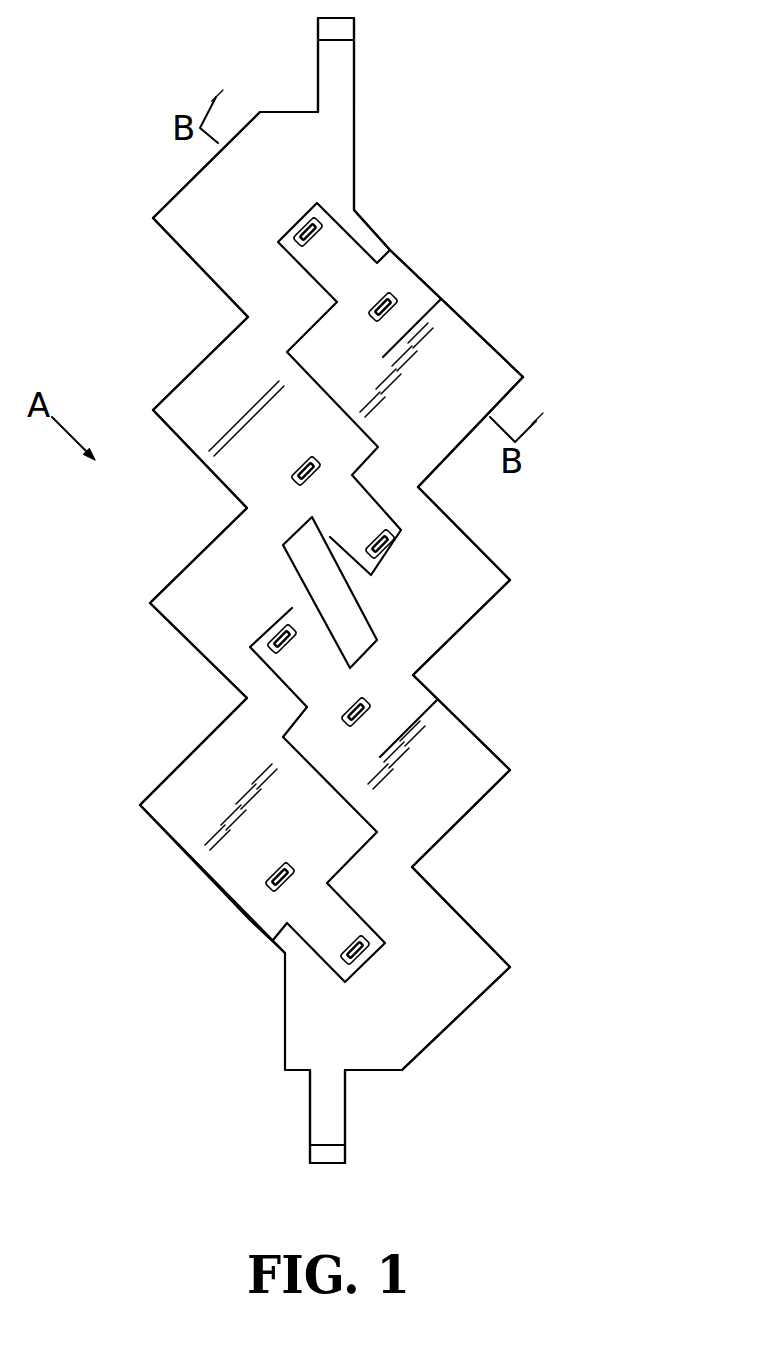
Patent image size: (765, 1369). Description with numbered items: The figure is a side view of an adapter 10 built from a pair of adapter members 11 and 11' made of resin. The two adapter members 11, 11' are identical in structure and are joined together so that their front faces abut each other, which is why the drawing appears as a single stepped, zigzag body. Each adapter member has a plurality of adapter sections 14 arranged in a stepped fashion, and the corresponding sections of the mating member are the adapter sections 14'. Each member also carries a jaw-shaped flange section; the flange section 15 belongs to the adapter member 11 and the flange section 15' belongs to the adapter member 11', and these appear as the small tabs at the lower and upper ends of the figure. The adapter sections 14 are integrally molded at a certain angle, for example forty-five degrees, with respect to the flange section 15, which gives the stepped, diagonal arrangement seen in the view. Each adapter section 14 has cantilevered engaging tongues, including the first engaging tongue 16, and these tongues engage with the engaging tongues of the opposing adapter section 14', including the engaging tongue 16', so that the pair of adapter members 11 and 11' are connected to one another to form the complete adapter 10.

The adapter 10 is at (538, 345).
The adapter member 11 is at (484, 329).
The adapter member 11' is at (204, 210).
The adapter section 14 is at (441, 692).
The adapter section 14' is at (185, 585).
The flange section 15 is at (362, 1122).
The flange section 15' is at (393, 114).
The first cantilevered engaging tongue 16 is at (279, 529).
The engaging tongue 16' is at (384, 645).